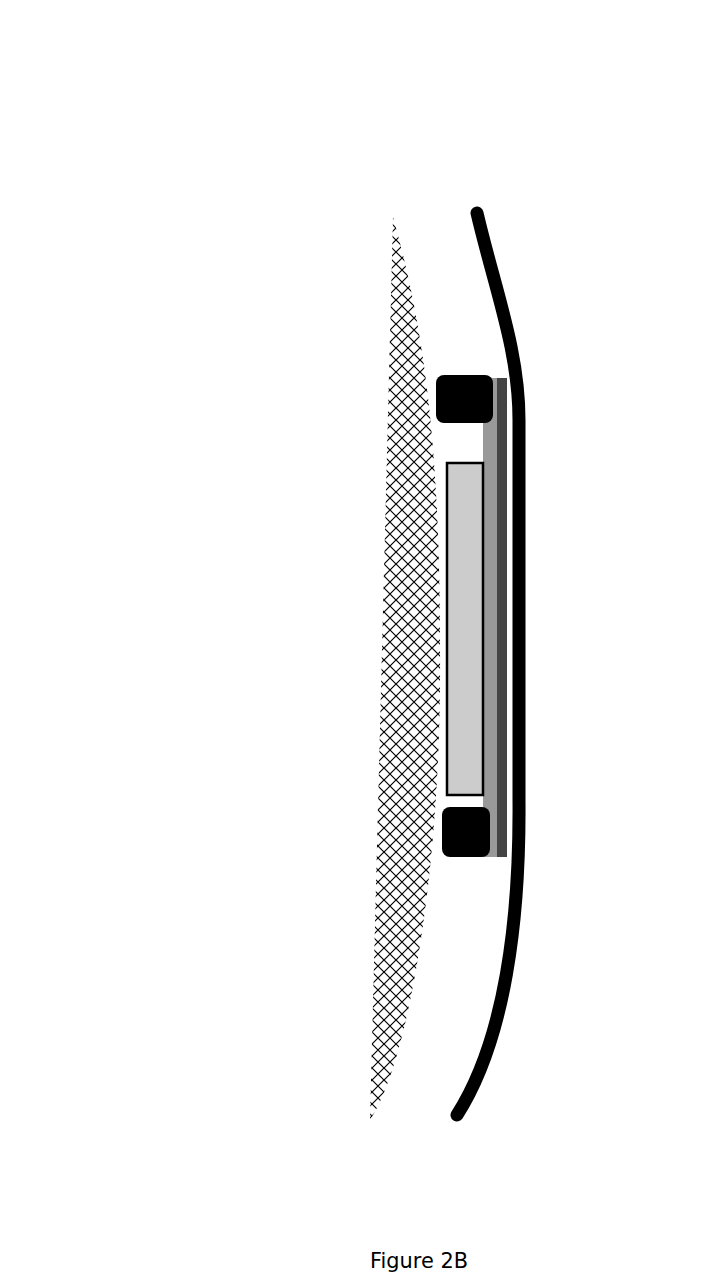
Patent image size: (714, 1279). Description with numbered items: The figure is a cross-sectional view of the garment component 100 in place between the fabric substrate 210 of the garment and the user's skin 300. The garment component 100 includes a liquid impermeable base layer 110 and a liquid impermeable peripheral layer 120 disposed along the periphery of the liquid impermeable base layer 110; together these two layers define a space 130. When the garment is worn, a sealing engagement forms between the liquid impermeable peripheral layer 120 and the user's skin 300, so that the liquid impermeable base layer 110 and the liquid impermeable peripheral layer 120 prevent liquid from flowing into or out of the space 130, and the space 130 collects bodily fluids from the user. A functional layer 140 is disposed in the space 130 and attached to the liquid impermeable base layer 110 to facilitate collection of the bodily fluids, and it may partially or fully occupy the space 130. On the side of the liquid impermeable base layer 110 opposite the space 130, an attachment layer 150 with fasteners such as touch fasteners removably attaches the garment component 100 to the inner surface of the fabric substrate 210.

The garment component 100 is at (152, 123).
The liquid impermeable base layer 110 is at (487, 457).
The liquid impermeable peripheral layer 120 is at (442, 840).
The space 130 is at (447, 476).
The functional layer 140 is at (457, 588).
The attachment layer 150 is at (500, 857).
The fabric substrate 210 is at (457, 185).
The user's skin 300 is at (397, 898).